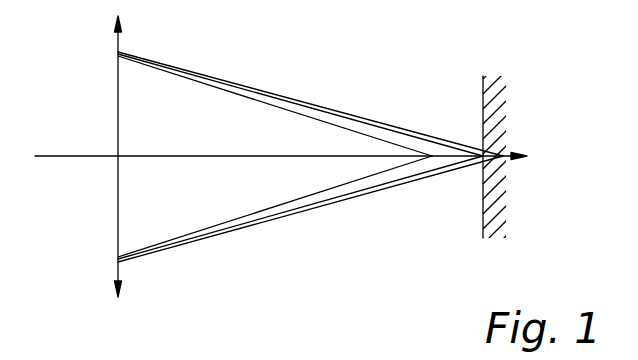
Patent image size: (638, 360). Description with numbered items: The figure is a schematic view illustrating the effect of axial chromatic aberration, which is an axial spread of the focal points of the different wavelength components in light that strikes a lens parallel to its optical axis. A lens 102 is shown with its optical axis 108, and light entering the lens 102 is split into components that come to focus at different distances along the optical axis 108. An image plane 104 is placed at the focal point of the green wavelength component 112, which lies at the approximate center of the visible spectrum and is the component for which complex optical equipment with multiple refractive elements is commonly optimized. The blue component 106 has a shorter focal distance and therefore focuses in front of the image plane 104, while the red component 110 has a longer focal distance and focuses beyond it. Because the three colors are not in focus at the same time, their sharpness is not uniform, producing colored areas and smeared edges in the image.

The lens 102 is at (117, 67).
The image plane 104 is at (500, 212).
The blue component 106 is at (284, 108).
The optical axis 108 is at (142, 156).
The red component 110 is at (405, 188).
The green wavelength component 112 is at (403, 129).